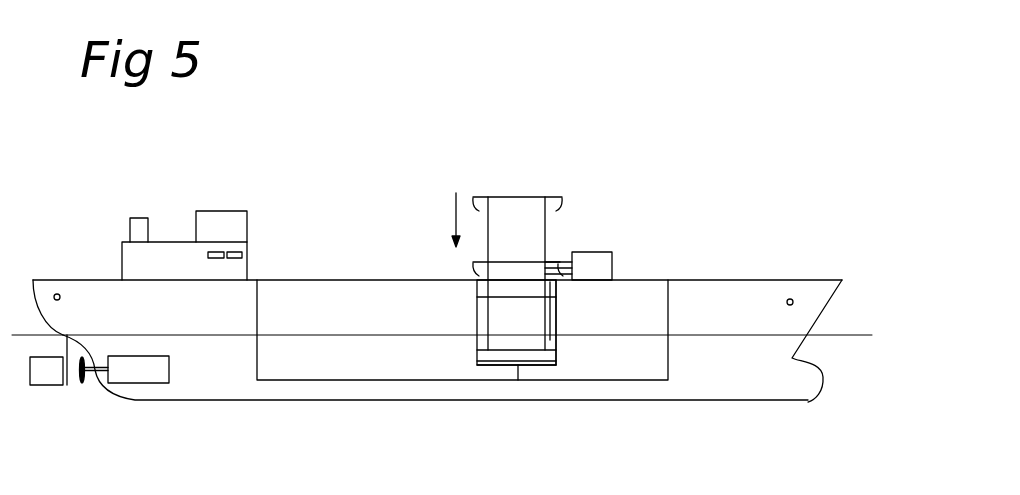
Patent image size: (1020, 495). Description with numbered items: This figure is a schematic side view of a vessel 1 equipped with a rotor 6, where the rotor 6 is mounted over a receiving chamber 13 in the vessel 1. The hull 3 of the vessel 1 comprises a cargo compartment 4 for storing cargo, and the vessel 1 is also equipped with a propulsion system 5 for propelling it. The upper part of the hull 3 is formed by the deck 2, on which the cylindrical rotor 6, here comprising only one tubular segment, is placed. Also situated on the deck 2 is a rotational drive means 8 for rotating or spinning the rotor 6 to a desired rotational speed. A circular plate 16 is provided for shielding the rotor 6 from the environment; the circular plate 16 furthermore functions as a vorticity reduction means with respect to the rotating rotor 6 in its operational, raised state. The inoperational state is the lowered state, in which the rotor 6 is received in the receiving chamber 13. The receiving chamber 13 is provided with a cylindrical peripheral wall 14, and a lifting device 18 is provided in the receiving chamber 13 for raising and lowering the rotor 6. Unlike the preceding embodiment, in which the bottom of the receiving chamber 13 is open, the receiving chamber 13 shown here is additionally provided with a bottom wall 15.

The vessel 1 is at (697, 193).
The deck 2 is at (710, 278).
The hull 3 is at (803, 383).
The cargo compartment 4 is at (328, 360).
The propulsion system 5 is at (148, 373).
The rotor 6 is at (568, 232).
The rotational drive means 8 is at (602, 267).
The receiving chamber 13 is at (475, 323).
The cylindrical peripheral wall 14 is at (557, 327).
The bottom wall 15 is at (518, 380).
The circular plate 16 is at (518, 196).
The lifting device 18 is at (493, 292).